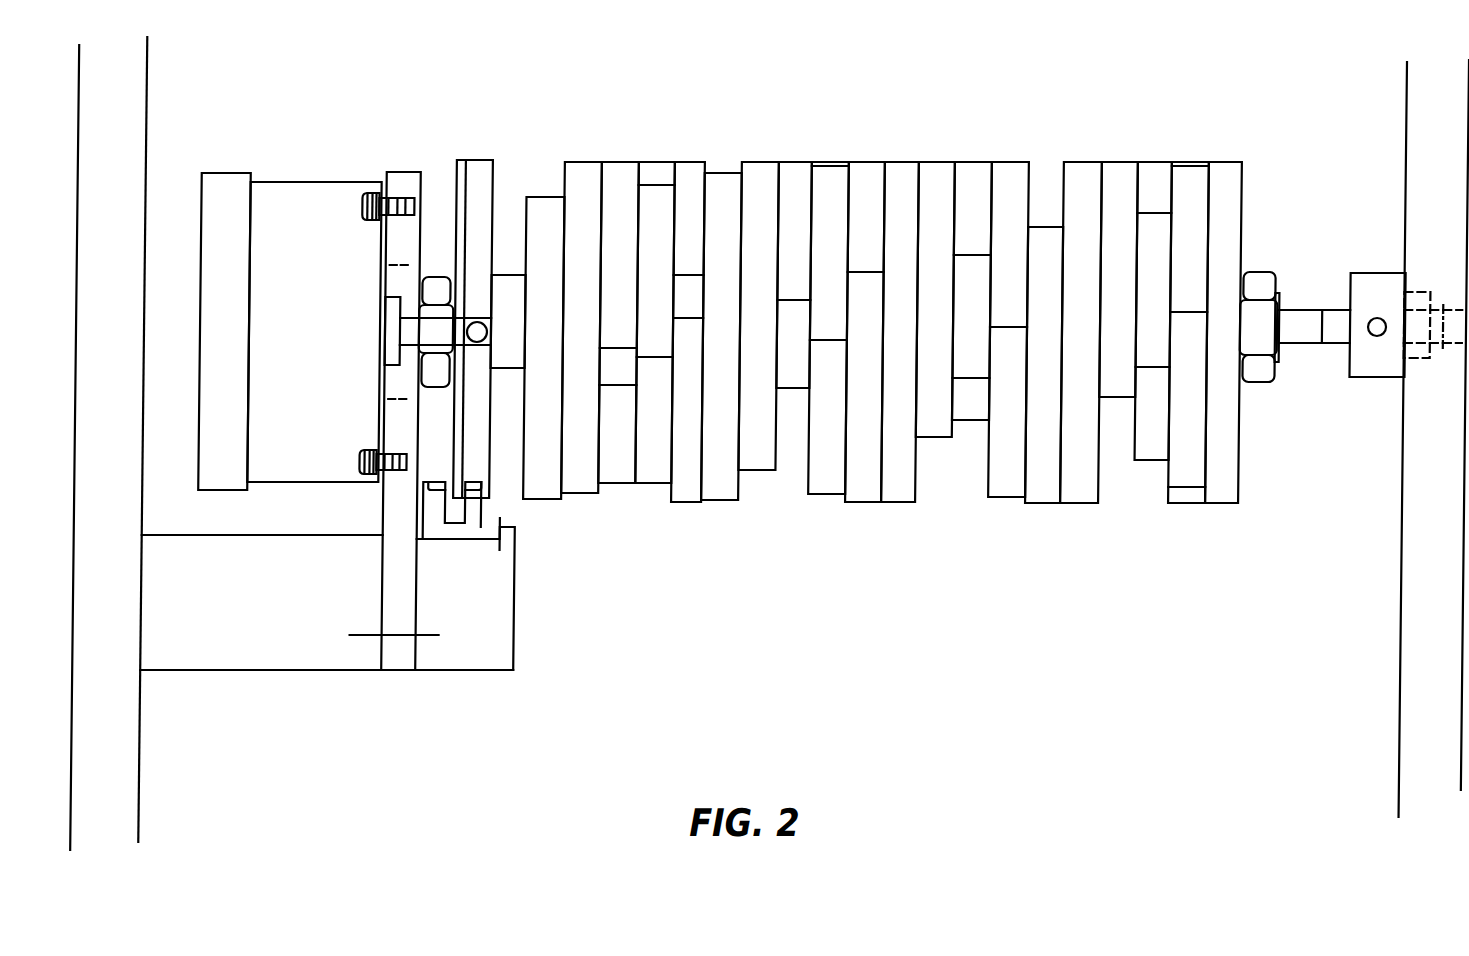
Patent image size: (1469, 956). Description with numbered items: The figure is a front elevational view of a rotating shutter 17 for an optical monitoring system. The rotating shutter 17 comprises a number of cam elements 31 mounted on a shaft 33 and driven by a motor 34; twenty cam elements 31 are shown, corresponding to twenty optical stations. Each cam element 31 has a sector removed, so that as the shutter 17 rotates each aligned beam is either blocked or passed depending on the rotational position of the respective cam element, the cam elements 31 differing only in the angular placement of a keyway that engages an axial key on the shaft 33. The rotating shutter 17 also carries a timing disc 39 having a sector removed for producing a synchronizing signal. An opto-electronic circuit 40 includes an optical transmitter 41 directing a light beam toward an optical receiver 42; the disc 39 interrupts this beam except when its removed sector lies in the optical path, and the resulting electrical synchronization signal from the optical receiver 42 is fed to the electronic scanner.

The rotating shutter 17 is at (848, 373).
The cam elements 31 is at (1215, 148).
The shaft 33 is at (1292, 322).
The motor 34 is at (334, 331).
The timing disc 39 is at (473, 160).
The opto-electronic circuit 40 is at (472, 526).
The optical transmitter 41 is at (438, 480).
The optical receiver 42 is at (476, 480).